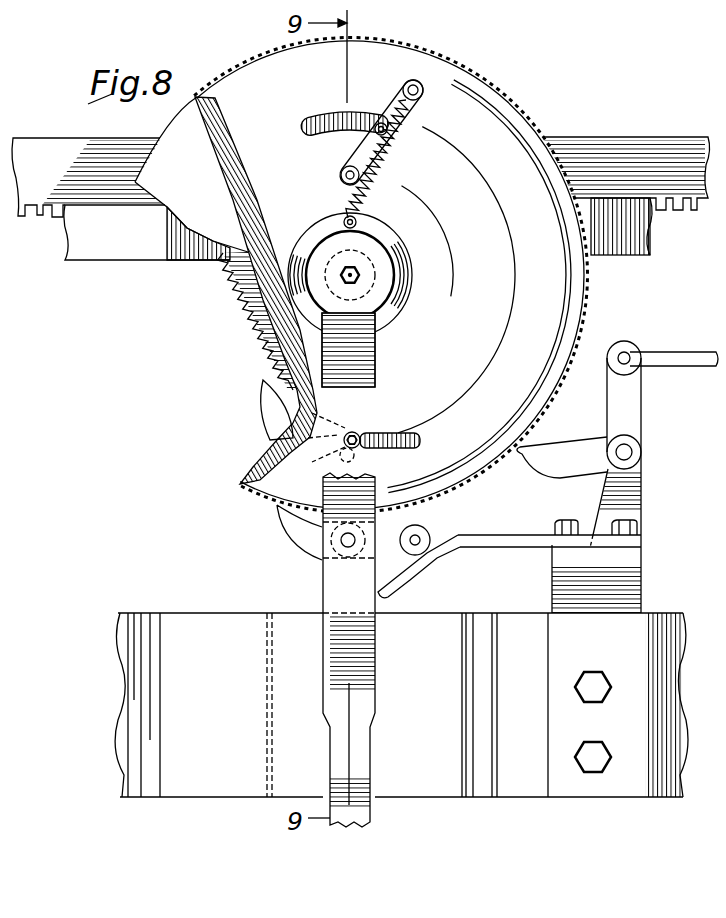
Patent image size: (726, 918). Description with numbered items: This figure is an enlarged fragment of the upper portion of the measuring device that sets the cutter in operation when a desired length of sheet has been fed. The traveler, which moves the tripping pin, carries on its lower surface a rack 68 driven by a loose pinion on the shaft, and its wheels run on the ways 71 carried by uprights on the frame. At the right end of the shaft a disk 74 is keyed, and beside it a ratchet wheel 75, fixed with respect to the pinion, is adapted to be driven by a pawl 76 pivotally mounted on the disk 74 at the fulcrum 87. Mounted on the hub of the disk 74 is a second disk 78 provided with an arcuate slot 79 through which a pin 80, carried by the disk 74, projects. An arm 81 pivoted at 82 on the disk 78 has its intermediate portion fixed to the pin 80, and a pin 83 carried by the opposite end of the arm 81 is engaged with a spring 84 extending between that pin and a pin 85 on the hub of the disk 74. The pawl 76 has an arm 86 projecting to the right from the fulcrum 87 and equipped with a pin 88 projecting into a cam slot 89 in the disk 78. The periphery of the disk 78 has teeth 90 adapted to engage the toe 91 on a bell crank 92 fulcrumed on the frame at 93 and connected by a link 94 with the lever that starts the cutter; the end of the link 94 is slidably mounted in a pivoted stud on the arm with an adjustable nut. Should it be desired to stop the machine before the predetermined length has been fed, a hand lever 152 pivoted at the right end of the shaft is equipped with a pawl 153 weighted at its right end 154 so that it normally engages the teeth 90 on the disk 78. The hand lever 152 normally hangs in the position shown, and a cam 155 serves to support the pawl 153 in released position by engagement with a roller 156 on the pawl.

The rack 68 is at (40, 208).
The ways 71 is at (82, 252).
The disk 74 is at (180, 195).
The ratchet wheel 75 is at (248, 338).
The pawl 76 is at (267, 410).
The second disk 78 is at (238, 122).
The arcuate slot 79 is at (337, 123).
The pin 80 is at (383, 122).
The arm 81 is at (358, 150).
The pivot 82 is at (341, 175).
The pin 83 is at (421, 80).
The spring 84 is at (388, 158).
The pin 85 is at (357, 221).
The arm 86 is at (338, 447).
The fulcrum 87 is at (350, 432).
The pin 88 is at (361, 437).
The cam slot 89 is at (418, 440).
The teeth 90 is at (510, 103).
The toe 91 is at (527, 454).
The bell crank 92 is at (632, 402).
The fulcrum 93 is at (630, 455).
The link 94 is at (689, 356).
The hand lever 152 is at (367, 707).
The pawl 153 is at (306, 537).
The weighted right end 154 is at (396, 552).
The cam 155 is at (460, 541).
The roller 156 is at (422, 527).